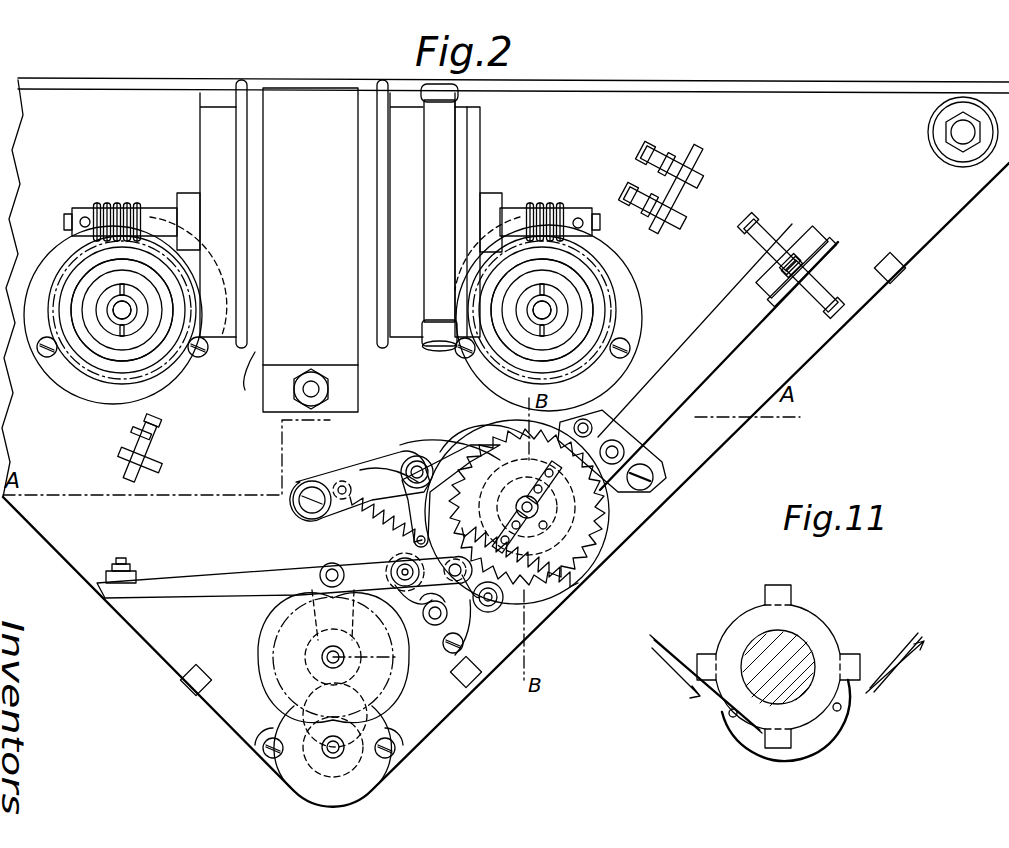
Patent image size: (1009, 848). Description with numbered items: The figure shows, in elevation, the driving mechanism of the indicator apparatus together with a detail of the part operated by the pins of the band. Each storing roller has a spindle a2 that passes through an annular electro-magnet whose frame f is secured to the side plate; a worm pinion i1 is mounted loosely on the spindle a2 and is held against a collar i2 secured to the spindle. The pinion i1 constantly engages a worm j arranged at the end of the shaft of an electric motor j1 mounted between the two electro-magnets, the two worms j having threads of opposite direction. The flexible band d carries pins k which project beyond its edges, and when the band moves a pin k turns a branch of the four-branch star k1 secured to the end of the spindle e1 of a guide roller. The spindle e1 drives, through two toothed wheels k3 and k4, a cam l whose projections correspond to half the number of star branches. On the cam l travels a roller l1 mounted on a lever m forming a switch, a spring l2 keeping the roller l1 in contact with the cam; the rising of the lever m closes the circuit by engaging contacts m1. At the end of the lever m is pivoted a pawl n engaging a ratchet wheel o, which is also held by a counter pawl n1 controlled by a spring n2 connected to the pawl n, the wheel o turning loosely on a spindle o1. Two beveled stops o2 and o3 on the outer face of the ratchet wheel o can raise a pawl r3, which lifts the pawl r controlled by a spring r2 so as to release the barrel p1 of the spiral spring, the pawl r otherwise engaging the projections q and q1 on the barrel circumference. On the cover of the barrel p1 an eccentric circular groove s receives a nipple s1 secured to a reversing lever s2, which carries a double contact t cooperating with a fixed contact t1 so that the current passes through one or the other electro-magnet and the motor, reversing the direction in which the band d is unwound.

In FIG. 2, the worm j is at (108, 212).
In FIG. 2, the electric motor j1 is at (440, 160).
In FIG. 2, the frame of the electro-magnet f is at (55, 265).
In FIG. 2, the worm pinion i1 is at (163, 366).
In FIG. 2, the collar i2 is at (100, 325).
In FIG. 2, the spindle a2 is at (120, 316).
In FIG. 2, the spring l2 is at (703, 166).
In FIG. 2, the double contact t is at (785, 242).
In FIG. 2, the fixed contact t1 is at (828, 240).
In FIG. 2, the reversing lever s2 is at (708, 352).
In FIG. 2, the eccentric circular groove s is at (600, 432).
In FIG. 2, the nipple s1 is at (504, 598).
In FIG. 2, the projection q is at (485, 440).
In FIG. 2, the projection q1 is at (450, 614).
In FIG. 2, the pawl r is at (452, 440).
In FIG. 2, the spring r2 is at (380, 478).
In FIG. 2, the pawl r3 is at (398, 474).
In FIG. 2, the ratchet wheel o is at (560, 548).
In FIG. 2, the spindle o1 is at (527, 507).
In FIG. 2, the stop o2 is at (430, 458).
In FIG. 2, the stop o3 is at (580, 528).
In FIG. 2, the barrel p1 is at (565, 535).
In FIG. 2, the pawl n is at (366, 510).
In FIG. 2, the counter pawl n1 is at (466, 645).
In FIG. 2, the spring n2 is at (468, 655).
In FIG. 2, the lever m is at (170, 584).
In FIG. 2, the contacts m1 is at (140, 478).
In FIG. 2, the cam l is at (262, 630).
In FIG. 2, the roller l1 is at (328, 572).
In FIG. 2, the spindle e1 is at (322, 748).
In FIG. 2, the toothed wheel k3 is at (340, 750).
In FIG. 2, the toothed wheel k4 is at (400, 748).
In FIG. 11, the four-branch star k1 is at (792, 618).
In FIG. 11, the pin k is at (730, 718).
In FIG. 11, the flexible band d is at (672, 664).